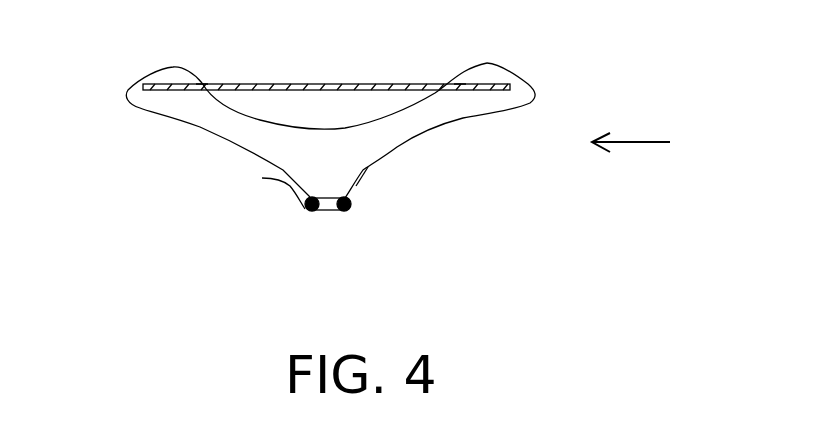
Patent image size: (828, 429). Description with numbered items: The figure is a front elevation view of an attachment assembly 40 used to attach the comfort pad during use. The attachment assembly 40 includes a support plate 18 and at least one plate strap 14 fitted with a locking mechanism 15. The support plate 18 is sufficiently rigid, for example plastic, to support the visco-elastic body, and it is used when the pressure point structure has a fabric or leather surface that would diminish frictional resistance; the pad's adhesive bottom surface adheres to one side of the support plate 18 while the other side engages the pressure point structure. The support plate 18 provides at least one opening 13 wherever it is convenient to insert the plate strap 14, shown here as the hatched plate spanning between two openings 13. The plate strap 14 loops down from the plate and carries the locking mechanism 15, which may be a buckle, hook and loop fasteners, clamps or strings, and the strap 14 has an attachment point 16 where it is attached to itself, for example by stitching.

The opening 13 is at (210, 76).
The plate strap 14 is at (157, 65).
The locking mechanism 15 is at (345, 222).
The attachment point 16 is at (385, 174).
The support plate 18 is at (335, 75).
The attachment assembly 40 is at (651, 144).